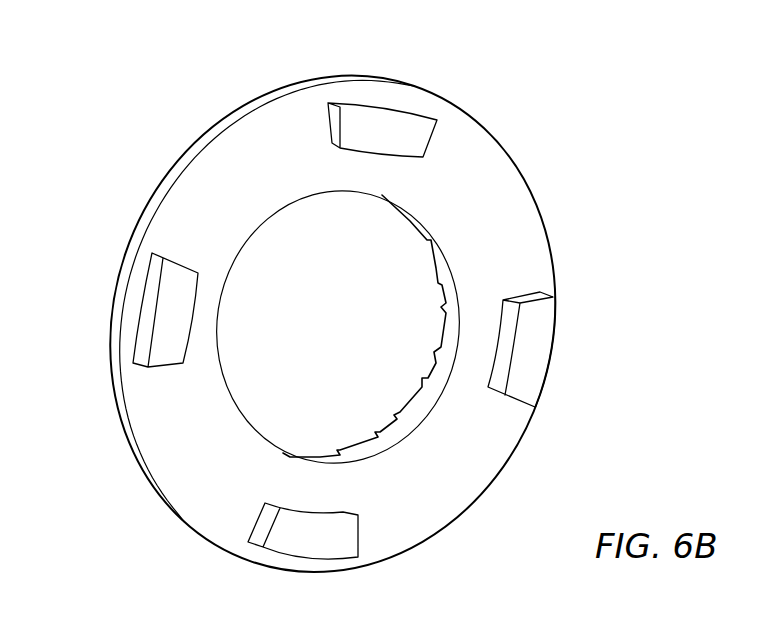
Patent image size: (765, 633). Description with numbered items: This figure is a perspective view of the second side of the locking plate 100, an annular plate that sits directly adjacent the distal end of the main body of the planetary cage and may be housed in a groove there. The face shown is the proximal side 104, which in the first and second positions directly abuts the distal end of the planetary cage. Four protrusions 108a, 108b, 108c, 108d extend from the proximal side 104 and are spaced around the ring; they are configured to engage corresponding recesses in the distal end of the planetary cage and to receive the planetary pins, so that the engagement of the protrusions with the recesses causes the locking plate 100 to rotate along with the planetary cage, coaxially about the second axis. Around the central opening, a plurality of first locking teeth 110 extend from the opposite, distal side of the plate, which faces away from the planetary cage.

The locking plate 100 is at (170, 92).
The proximal side 104 is at (217, 189).
The protrusion 108a is at (388, 128).
The protrusion 108b is at (172, 327).
The protrusion 108c is at (325, 540).
The protrusion 108d is at (533, 342).
The first locking teeth 110 is at (408, 400).